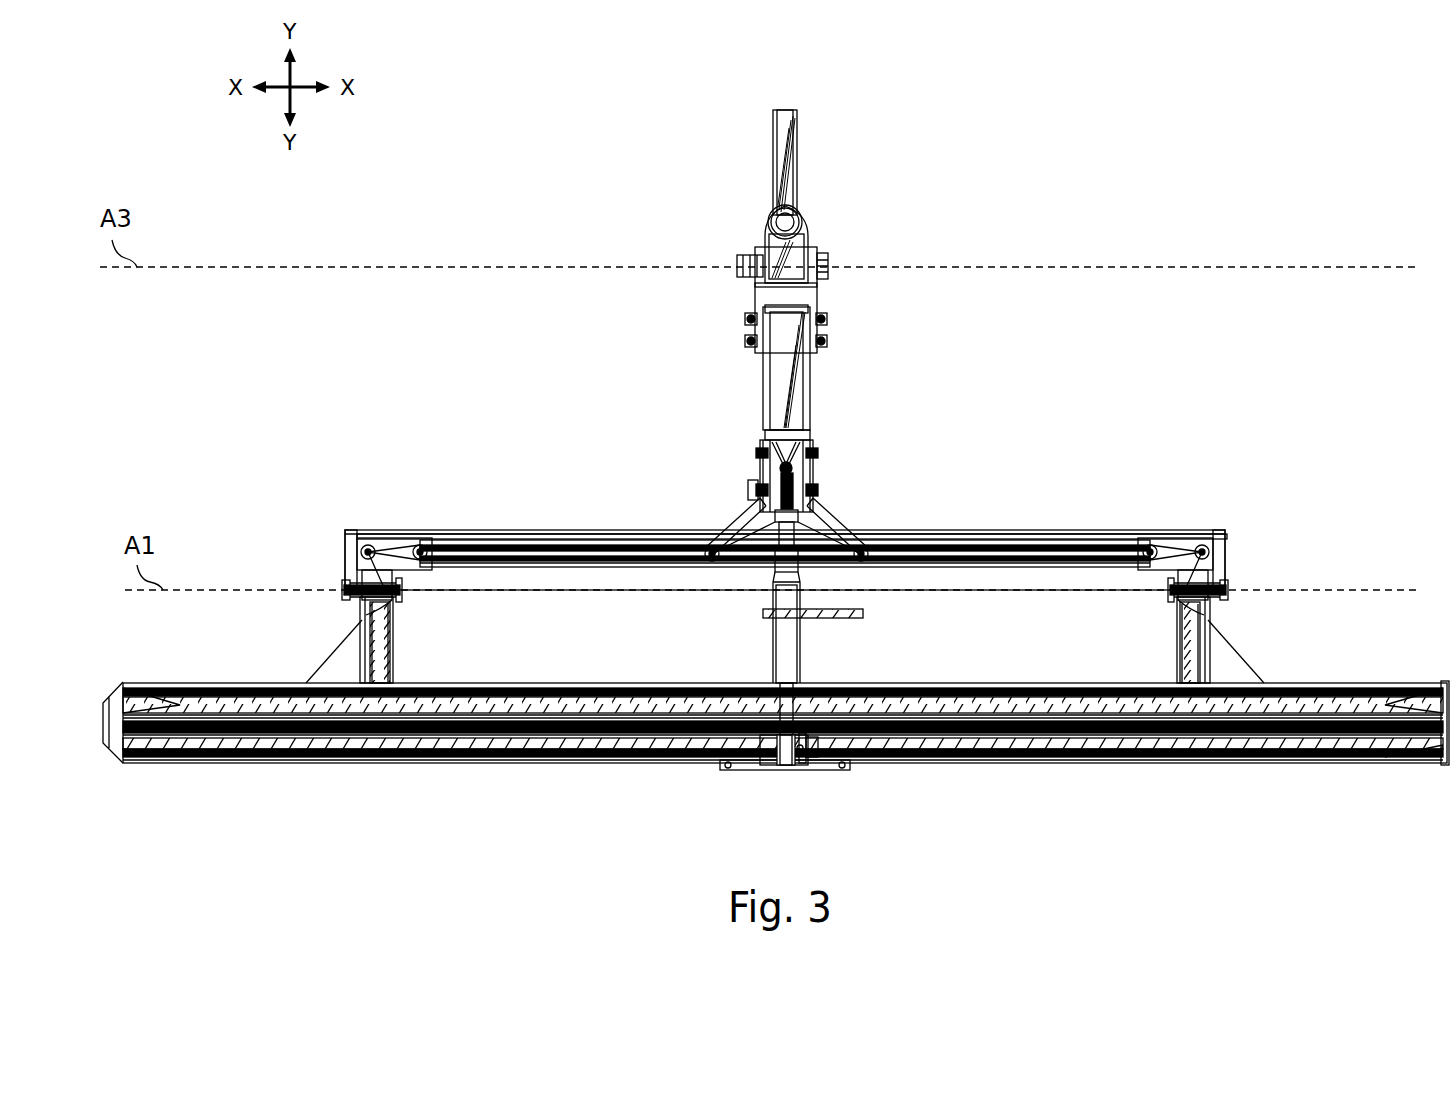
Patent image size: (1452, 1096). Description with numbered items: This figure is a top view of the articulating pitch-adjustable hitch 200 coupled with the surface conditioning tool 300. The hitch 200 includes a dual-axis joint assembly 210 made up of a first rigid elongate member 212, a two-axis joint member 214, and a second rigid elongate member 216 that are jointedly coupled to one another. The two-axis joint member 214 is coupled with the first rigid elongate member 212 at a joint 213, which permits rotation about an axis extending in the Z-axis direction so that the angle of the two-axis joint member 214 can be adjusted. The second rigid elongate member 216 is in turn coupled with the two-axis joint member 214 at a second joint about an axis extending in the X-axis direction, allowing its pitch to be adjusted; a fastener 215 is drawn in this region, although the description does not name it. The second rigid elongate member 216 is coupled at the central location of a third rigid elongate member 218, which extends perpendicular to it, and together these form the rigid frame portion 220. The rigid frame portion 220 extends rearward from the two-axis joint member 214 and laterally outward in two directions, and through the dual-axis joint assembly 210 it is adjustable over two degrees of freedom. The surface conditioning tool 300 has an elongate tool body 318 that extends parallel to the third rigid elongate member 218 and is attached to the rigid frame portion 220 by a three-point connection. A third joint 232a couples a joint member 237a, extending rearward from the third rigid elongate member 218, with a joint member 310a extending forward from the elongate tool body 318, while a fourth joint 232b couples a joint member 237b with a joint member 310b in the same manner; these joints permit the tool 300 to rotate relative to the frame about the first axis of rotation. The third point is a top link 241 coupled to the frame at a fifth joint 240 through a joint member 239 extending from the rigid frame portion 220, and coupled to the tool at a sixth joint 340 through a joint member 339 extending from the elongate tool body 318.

The hitch 200 is at (310, 403).
The dual-axis joint assembly 210 is at (600, 258).
The first rigid elongate member 212 is at (805, 157).
The joint 213 is at (766, 217).
The two-axis joint member 214 is at (815, 240).
The pivot bolt 215 is at (741, 269).
The second rigid elongate member 216 is at (812, 365).
The third rigid elongate member 218 is at (975, 530).
The rigid frame portion 220 is at (565, 452).
The third joint 232a is at (336, 588).
The fourth joint 232b is at (1234, 588).
The joint member 237a is at (345, 600).
The joint member 237b is at (1222, 600).
The joint member 239 is at (810, 480).
The fifth joint 240 is at (818, 492).
The top link 241 is at (773, 650).
The surface conditioning tool 300 is at (235, 786).
The joint member 310a is at (396, 655).
The joint member 310b is at (1178, 655).
The elongate tool body 318 is at (900, 683).
The joint member 339 is at (815, 753).
The sixth joint 340 is at (785, 773).